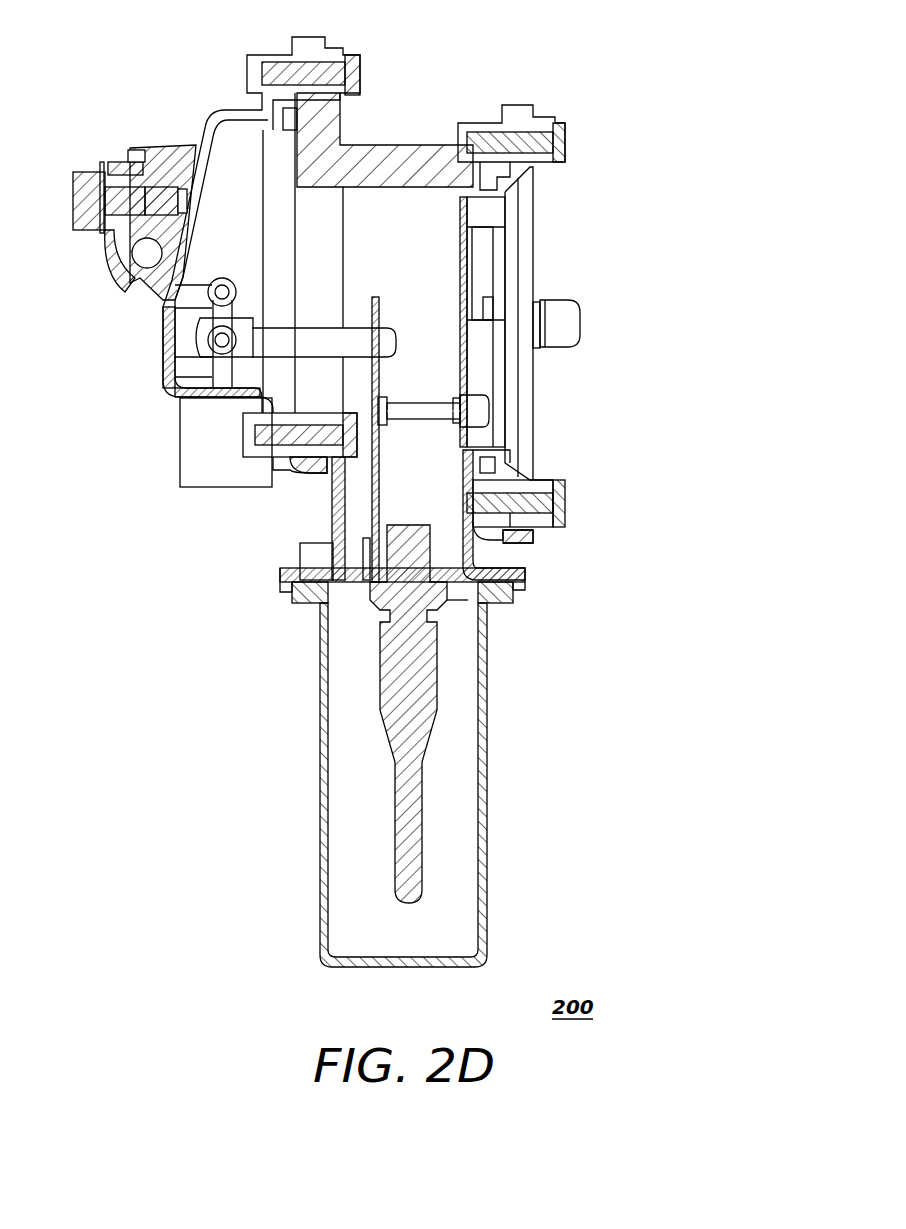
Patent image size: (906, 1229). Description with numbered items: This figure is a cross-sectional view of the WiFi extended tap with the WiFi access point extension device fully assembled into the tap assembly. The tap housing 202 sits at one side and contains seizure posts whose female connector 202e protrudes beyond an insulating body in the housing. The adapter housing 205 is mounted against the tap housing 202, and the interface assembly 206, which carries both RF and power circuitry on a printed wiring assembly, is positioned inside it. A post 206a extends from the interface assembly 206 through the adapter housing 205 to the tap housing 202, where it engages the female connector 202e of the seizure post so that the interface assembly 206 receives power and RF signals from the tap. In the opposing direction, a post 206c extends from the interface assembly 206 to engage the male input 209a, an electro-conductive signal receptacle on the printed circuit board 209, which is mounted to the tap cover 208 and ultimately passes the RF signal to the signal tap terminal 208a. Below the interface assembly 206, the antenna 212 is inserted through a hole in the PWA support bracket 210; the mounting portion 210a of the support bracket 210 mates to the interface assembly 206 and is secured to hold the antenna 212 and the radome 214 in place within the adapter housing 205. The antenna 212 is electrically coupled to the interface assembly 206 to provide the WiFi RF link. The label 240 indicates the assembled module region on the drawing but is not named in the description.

The tap housing 202 is at (218, 112).
The female connector 202e is at (207, 327).
The adapter housing 205 is at (431, 138).
The interface assembly 206 is at (372, 480).
The post 206a is at (353, 325).
The post 206c is at (421, 421).
The tap cover 208 is at (536, 207).
The signal tap terminal 208a is at (581, 321).
The printed circuit board 209 is at (461, 260).
The male input 209a is at (485, 408).
The PWA support bracket 210 is at (340, 603).
The mounting portion 210a is at (363, 560).
The antenna 212 is at (380, 668).
The radome 214 is at (320, 838).
The sensor module 240 is at (570, 323).